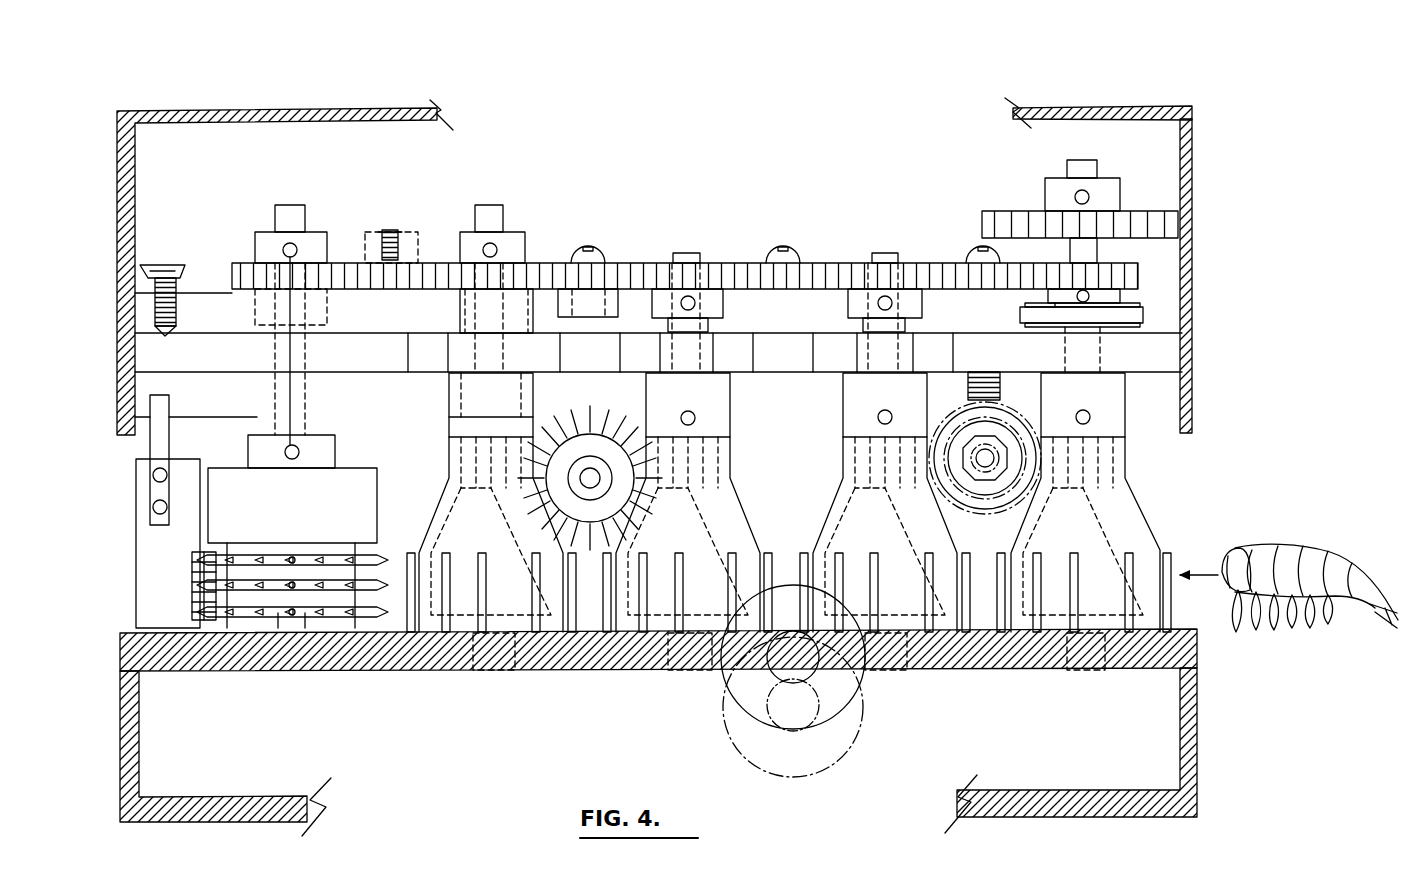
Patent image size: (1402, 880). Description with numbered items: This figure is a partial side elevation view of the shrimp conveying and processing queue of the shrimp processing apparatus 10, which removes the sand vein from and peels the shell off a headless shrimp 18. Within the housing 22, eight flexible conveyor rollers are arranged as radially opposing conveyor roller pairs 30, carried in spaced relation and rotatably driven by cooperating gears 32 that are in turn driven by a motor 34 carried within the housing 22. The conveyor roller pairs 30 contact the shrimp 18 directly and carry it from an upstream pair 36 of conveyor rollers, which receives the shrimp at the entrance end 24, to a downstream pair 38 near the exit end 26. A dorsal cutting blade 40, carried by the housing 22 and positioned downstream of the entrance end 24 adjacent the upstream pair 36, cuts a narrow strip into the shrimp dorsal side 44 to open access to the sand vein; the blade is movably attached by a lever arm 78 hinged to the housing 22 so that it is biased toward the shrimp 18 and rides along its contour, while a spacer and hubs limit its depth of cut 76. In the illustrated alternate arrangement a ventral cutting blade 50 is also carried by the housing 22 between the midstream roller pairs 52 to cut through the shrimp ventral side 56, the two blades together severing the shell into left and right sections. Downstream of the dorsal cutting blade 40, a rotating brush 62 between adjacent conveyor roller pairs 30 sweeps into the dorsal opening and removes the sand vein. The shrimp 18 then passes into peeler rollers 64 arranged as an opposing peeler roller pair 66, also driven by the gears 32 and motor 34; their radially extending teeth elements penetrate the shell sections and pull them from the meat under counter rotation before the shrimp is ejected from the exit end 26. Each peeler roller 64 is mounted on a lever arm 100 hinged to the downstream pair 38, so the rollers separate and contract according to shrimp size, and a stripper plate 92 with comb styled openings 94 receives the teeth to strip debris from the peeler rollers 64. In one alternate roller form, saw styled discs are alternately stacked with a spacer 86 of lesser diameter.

The shrimp processing apparatus 10 is at (1097, 77).
The housing 22 is at (688, 267).
The cooperating gears 32 is at (685, 319).
The motor 34 is at (1172, 243).
The lever arm 78 is at (1110, 349).
The dorsal cutting blade 40 is at (1093, 430).
The conveyor roller pairs 30 is at (1158, 430).
The upstream pair of conveyor rollers 36 is at (1110, 534).
The shrimp dorsal side 44 is at (1252, 545).
The shrimp 18 is at (1316, 569).
The shrimp ventral side 56 is at (1291, 624).
The entrance end 24 is at (697, 645).
The ventral cutting blade 50 is at (824, 681).
The midstream roller pairs 52 is at (789, 676).
The downstream pair of conveyor rollers 38 is at (768, 652).
The spacer 86 is at (292, 636).
The comb styled openings 94 is at (185, 641).
The exit end 26 is at (628, 725).
The stripper plate 92 is at (145, 543).
The lever arm 100 is at (135, 460).
The opposing peeler roller pair 66 is at (304, 530).
The peeler rollers 64 is at (306, 525).
The brush 62 is at (590, 464).
The depth of cut 76 is at (800, 557).